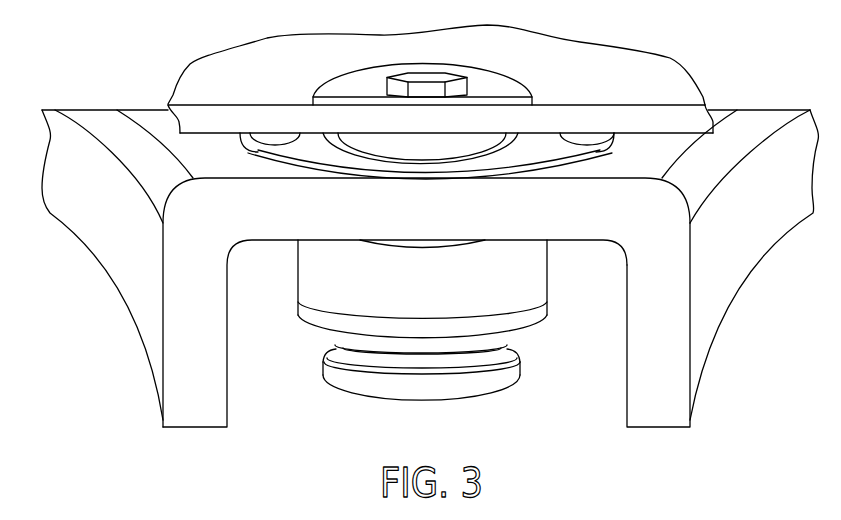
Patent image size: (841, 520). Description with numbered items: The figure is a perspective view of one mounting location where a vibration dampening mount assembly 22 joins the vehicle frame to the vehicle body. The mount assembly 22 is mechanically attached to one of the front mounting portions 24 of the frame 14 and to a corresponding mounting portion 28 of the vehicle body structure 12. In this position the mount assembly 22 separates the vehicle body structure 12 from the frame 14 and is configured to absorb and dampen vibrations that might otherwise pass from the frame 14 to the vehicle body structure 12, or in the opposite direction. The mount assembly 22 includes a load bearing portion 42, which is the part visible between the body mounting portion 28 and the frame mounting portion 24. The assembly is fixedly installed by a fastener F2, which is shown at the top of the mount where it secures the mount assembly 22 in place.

The vehicle body structure 12 is at (224, 96).
The frame 14 is at (742, 289).
The vibration dampening mount assembly 22 is at (556, 286).
The front mounting portion 24 is at (655, 397).
The mounting portion 28 is at (587, 73).
The load bearing portion 42 is at (378, 147).
The fastener F2 is at (432, 77).